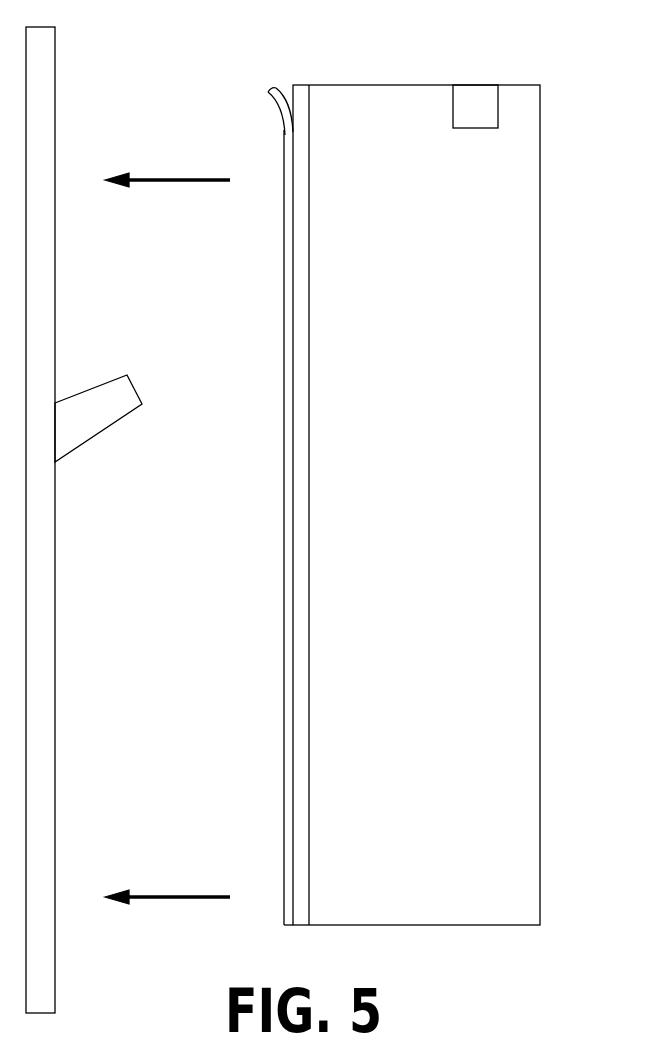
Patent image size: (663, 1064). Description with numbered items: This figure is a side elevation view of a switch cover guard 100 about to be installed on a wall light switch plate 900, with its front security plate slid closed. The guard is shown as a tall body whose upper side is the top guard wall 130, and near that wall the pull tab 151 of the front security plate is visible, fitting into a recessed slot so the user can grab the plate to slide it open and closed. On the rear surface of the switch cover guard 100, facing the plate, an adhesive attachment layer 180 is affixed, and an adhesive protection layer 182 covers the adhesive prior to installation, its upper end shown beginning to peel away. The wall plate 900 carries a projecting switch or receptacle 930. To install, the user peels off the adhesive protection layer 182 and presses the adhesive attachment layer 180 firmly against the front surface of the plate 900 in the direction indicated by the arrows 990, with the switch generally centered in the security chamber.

The switch cover guard 100 is at (530, 953).
The top guard wall 130 is at (373, 85).
The pull tab 151 is at (476, 97).
The adhesive attachment layer 180 is at (302, 85).
The adhesive protection layer 182 is at (284, 128).
The wall light switch plate 900 is at (42, 289).
The receptacle 930 is at (112, 425).
The arrows 990 is at (210, 182).